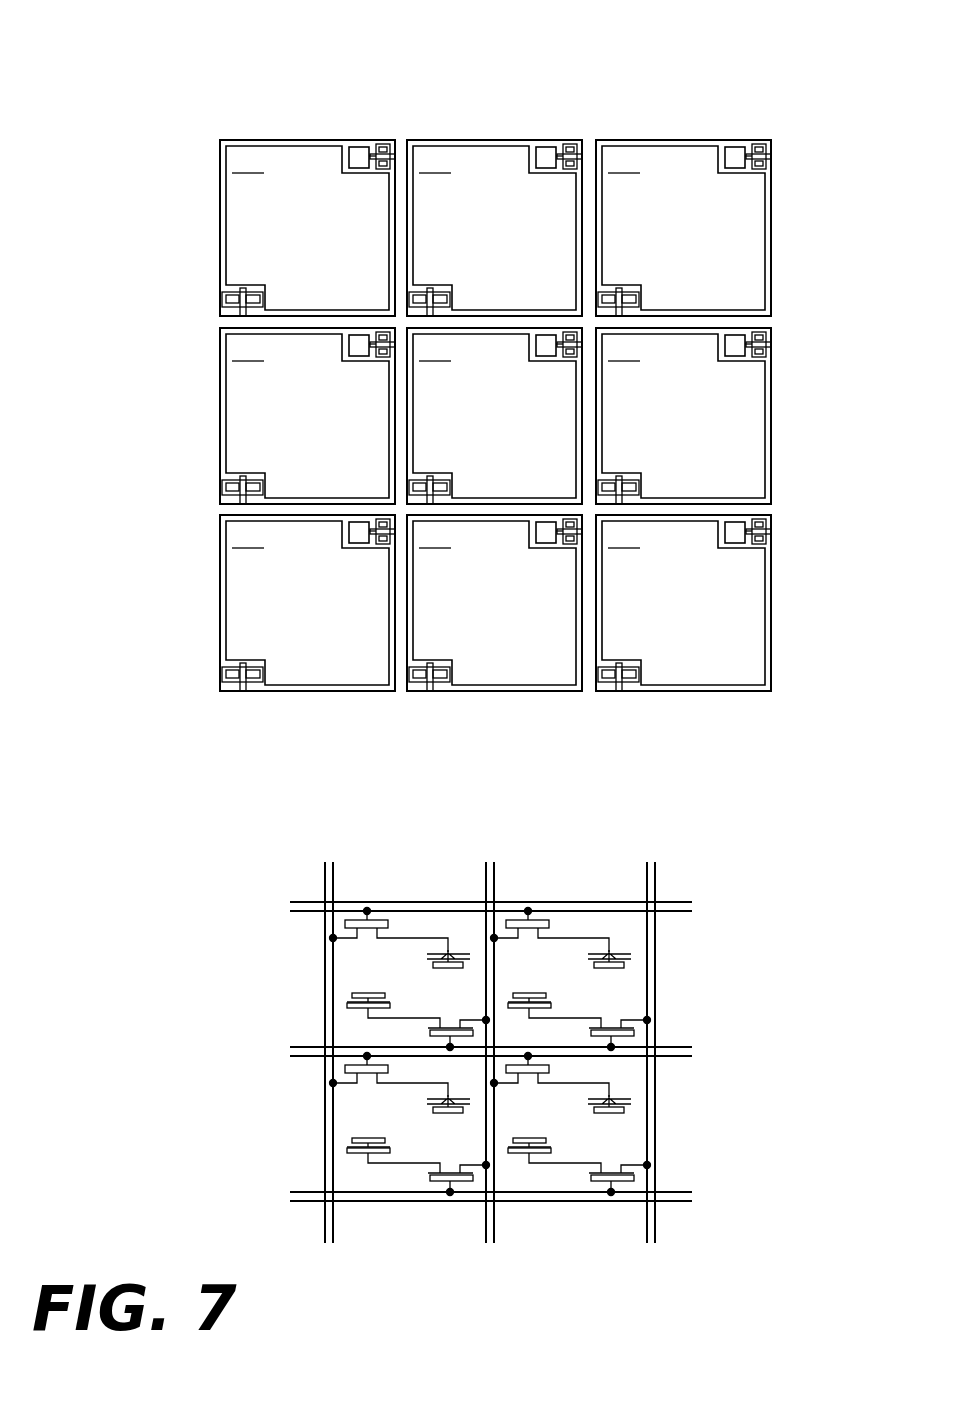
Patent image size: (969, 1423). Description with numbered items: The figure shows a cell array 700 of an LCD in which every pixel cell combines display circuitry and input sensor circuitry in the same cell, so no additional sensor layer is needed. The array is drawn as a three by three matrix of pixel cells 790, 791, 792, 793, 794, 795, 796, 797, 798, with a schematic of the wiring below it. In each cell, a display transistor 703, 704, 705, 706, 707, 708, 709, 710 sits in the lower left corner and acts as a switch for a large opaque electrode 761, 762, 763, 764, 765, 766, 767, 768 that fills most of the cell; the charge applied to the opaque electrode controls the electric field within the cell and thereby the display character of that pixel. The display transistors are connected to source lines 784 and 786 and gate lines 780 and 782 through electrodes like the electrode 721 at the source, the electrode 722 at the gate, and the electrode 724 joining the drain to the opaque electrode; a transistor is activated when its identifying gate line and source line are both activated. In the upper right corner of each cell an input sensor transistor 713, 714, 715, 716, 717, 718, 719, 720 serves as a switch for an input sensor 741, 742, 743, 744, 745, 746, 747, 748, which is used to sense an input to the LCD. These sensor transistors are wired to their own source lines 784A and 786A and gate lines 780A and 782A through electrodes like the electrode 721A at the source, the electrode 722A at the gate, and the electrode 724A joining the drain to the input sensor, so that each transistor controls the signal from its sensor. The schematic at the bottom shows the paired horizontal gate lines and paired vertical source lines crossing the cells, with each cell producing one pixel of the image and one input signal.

The cell array 700 is at (495, 375).
The display transistor 703 is at (430, 290).
The display transistor 704 is at (619, 290).
The display transistor 705 is at (242, 478).
The display transistor 706 is at (430, 478).
The display transistor 707 is at (619, 478).
The display transistor 708 is at (242, 665).
The display transistor 709 is at (430, 665).
The display transistor 710 is at (619, 665).
The input sensor transistor 713 is at (573, 170).
The input sensor transistor 714 is at (760, 170).
The input sensor transistor 715 is at (384, 360).
The input sensor transistor 716 is at (574, 360).
The input sensor transistor 717 is at (758, 360).
The input sensor transistor 718 is at (384, 545).
The input sensor transistor 719 is at (574, 545).
The input sensor transistor 720 is at (762, 545).
The electrode 721 is at (224, 298).
The electrode 722 is at (241, 314).
The electrode 724 is at (262, 299).
The electrode 721A is at (392, 155).
The electrode 722A is at (384, 143).
The electrode 724A is at (378, 147).
The input sensor 741 is at (549, 142).
The input sensor 742 is at (736, 142).
The input sensor 743 is at (349, 348).
The input sensor 744 is at (537, 348).
The input sensor 745 is at (738, 338).
The input sensor 746 is at (349, 533).
The input sensor 747 is at (537, 533).
The input sensor 748 is at (726, 533).
The opaque electrode 761 is at (494, 228).
The opaque electrode 762 is at (683, 228).
The opaque electrode 763 is at (307, 416).
The opaque electrode 764 is at (494, 416).
The opaque electrode 765 is at (683, 416).
The opaque electrode 766 is at (307, 603).
The opaque electrode 767 is at (494, 603).
The opaque electrode 768 is at (683, 603).
The gate line 780 is at (690, 1047).
The gate line 780A is at (290, 911).
The gate line 782 is at (690, 1192).
The gate line 782A is at (300, 1058).
The source line 784 is at (486, 873).
The source line 784A is at (333, 873).
The source line 786 is at (647, 873).
The source line 786A is at (494, 873).
The pixel cell 790 is at (220, 205).
The pixel cell 791 is at (463, 140).
The pixel cell 792 is at (632, 140).
The pixel cell 793 is at (220, 415).
The pixel cell 794 is at (583, 490).
The pixel cell 795 is at (771, 430).
The pixel cell 796 is at (220, 590).
The pixel cell 797 is at (500, 691).
The pixel cell 798 is at (705, 691).